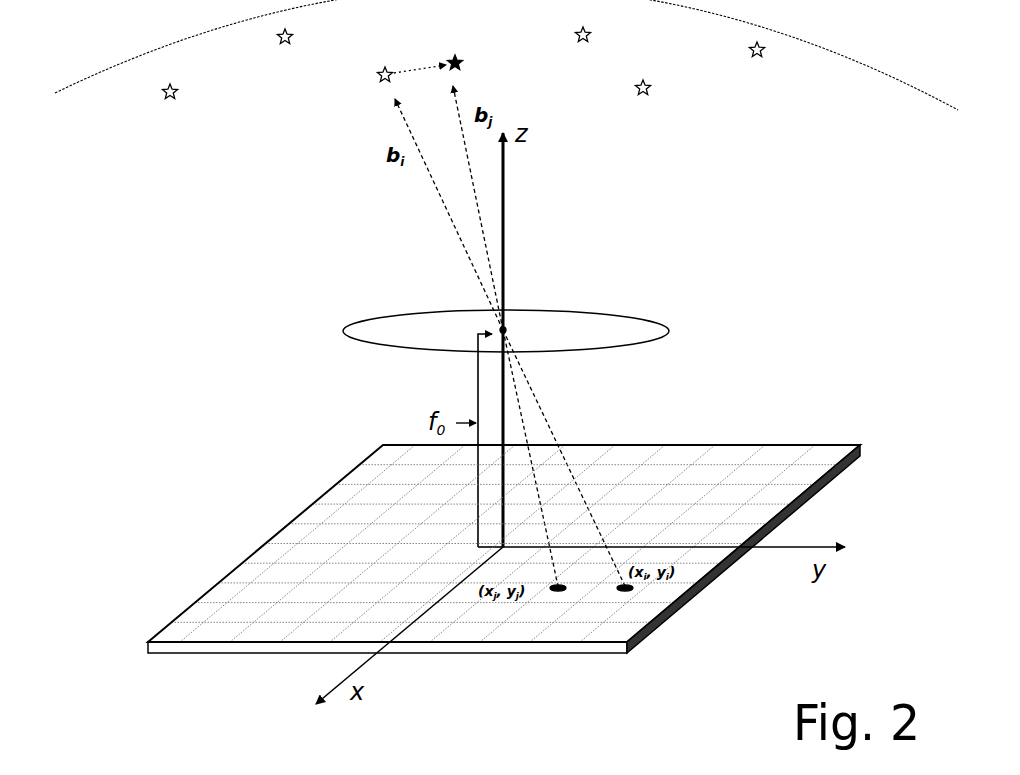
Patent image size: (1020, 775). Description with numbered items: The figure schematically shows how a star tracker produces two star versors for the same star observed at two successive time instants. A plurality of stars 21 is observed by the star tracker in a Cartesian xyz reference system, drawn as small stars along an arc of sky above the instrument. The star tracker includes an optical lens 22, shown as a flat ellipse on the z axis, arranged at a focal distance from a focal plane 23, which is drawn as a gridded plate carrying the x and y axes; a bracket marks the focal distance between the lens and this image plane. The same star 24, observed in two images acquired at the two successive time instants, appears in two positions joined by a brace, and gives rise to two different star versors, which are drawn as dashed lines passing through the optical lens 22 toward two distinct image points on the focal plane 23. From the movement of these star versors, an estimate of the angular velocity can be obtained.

The stars 21 is at (176, 182).
The optical lens 22 is at (353, 328).
The focal plane 23 is at (308, 532).
The same star 24 is at (393, 72).